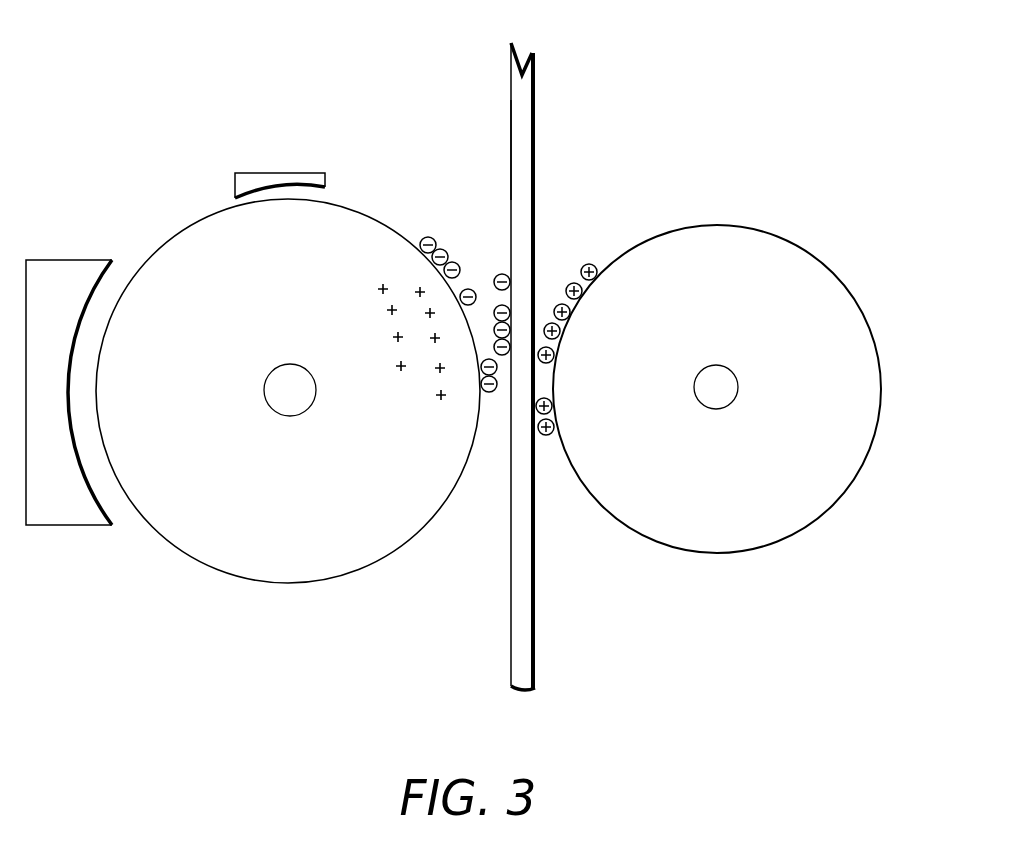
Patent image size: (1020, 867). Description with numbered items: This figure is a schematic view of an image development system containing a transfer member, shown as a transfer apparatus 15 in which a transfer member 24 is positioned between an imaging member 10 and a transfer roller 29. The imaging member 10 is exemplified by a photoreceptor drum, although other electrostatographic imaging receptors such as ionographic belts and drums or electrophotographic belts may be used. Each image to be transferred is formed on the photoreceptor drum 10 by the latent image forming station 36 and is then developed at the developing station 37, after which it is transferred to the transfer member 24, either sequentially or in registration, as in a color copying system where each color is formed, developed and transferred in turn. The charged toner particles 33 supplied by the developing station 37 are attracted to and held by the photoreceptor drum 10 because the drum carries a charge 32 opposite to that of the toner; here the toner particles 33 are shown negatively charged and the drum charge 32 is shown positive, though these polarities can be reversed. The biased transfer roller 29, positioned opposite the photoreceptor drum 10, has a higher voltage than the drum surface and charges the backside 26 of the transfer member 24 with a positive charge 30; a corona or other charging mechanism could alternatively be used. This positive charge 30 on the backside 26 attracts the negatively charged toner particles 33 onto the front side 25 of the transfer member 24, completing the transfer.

The imaging member 10 is at (266, 567).
The transfer apparatus 15 is at (682, 128).
The transfer member 24 is at (523, 167).
The front side 25 is at (508, 143).
The backside 26 is at (538, 80).
The transfer roller 29 is at (669, 537).
The positive charge 30 is at (592, 264).
The charge 32 is at (383, 288).
The toner particles 33 is at (433, 242).
The image forming station 36 is at (74, 275).
The developing station 37 is at (283, 178).